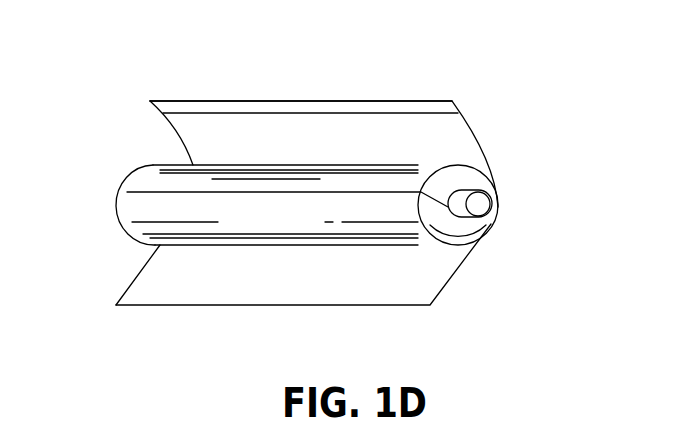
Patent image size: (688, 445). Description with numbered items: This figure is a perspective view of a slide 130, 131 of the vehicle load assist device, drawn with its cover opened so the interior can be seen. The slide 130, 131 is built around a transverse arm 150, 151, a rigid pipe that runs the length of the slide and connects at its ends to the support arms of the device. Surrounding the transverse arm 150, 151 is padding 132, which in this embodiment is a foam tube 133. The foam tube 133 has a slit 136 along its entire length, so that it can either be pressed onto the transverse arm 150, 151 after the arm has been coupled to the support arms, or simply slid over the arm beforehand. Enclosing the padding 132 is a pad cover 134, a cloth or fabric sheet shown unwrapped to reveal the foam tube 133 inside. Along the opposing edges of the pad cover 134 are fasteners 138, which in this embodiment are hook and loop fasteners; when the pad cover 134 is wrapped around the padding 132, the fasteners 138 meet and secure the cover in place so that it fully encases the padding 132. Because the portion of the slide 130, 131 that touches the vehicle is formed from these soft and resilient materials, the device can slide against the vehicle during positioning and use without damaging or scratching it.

The slide 130 is at (307, 199).
The slide 131 is at (307, 199).
The padding 132 is at (507, 205).
The foam tube 133 is at (477, 228).
The pad cover 134 is at (410, 286).
The slit 136 is at (147, 194).
The fasteners 138 is at (204, 108).
The transverse arm 150 is at (499, 149).
The transverse arm 151 is at (468, 192).